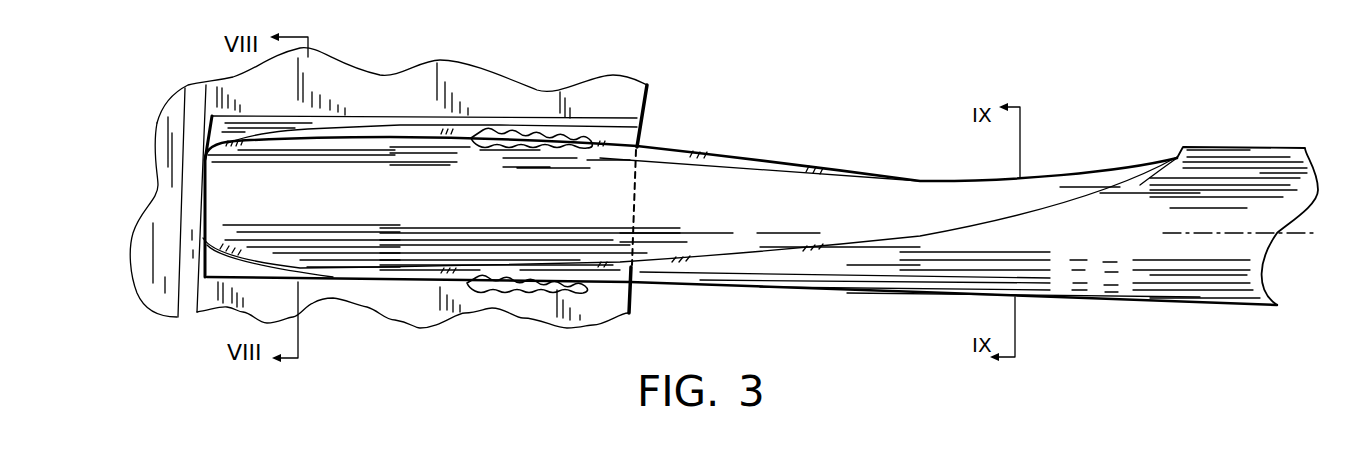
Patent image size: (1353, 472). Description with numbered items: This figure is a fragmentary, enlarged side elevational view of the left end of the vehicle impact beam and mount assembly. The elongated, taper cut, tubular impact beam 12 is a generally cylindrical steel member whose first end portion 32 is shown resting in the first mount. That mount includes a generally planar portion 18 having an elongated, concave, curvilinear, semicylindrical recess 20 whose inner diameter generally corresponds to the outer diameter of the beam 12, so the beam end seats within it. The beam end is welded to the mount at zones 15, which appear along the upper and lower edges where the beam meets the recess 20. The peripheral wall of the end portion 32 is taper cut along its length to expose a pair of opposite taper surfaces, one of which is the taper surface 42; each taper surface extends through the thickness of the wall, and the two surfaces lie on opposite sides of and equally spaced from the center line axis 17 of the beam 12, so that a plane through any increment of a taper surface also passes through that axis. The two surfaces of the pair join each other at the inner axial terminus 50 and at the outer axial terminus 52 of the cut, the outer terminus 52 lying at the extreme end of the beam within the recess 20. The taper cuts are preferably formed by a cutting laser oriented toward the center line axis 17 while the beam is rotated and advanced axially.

The tubular impact beam 12 is at (1240, 177).
The weld zones 15 is at (588, 137).
The center line axis 17 is at (1310, 233).
The generally planar portion 18 is at (552, 95).
The semicylindrical recess 20 is at (643, 143).
The first end portion 32 is at (717, 192).
The taper surface 42 is at (656, 262).
The inner axial terminus 50 is at (1177, 158).
The outer axial terminus 52 is at (203, 208).